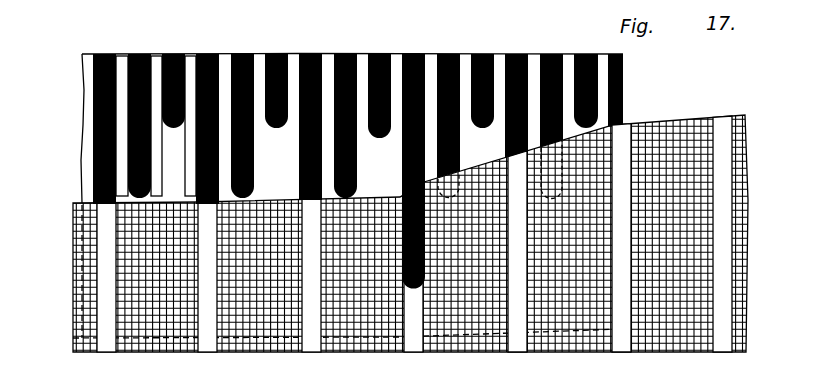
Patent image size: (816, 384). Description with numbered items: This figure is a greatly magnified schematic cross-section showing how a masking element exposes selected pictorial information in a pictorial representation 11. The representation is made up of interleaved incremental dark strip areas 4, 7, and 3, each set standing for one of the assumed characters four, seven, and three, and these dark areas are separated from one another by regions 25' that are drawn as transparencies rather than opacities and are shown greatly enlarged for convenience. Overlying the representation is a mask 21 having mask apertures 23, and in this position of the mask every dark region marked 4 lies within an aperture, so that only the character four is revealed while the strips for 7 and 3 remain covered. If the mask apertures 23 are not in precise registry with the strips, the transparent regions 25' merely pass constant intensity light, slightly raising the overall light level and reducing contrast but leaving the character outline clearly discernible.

The dark strip area representing numeral 3 is at (176, 54).
The dark strip area representing numeral 4 is at (101, 54).
The dark strip area representing numeral 7 is at (141, 54).
The pictorial representation 11 is at (82, 169).
The mask 21 is at (75, 348).
The mask apertures 23 is at (213, 352).
The transparent regions 25' is at (167, 196).